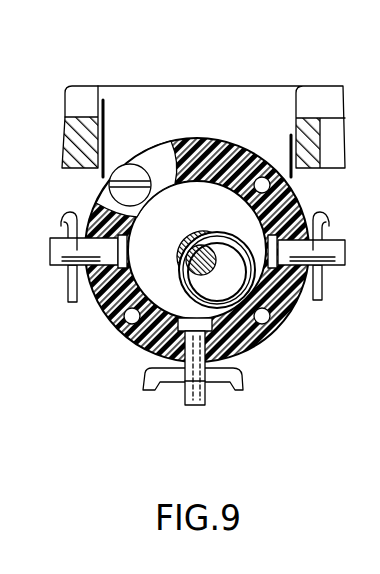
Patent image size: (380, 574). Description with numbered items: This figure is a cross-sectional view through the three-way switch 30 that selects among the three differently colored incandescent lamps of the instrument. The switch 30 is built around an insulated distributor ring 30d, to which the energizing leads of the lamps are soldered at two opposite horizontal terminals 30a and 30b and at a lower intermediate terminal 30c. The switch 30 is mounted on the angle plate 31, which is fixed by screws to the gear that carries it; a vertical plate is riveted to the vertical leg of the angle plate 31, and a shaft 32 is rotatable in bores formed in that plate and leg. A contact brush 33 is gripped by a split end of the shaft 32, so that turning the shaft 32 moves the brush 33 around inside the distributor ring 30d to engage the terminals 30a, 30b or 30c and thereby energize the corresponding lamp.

The three-way switch 30 is at (280, 365).
The horizontal terminal 30a is at (52, 240).
The horizontal terminal 30b is at (336, 266).
The lower intermediate terminal 30c is at (193, 406).
The insulated distributor ring 30d is at (128, 348).
The angle plate 31 is at (193, 97).
The shaft 32 is at (187, 233).
The contact brush 33 is at (180, 282).